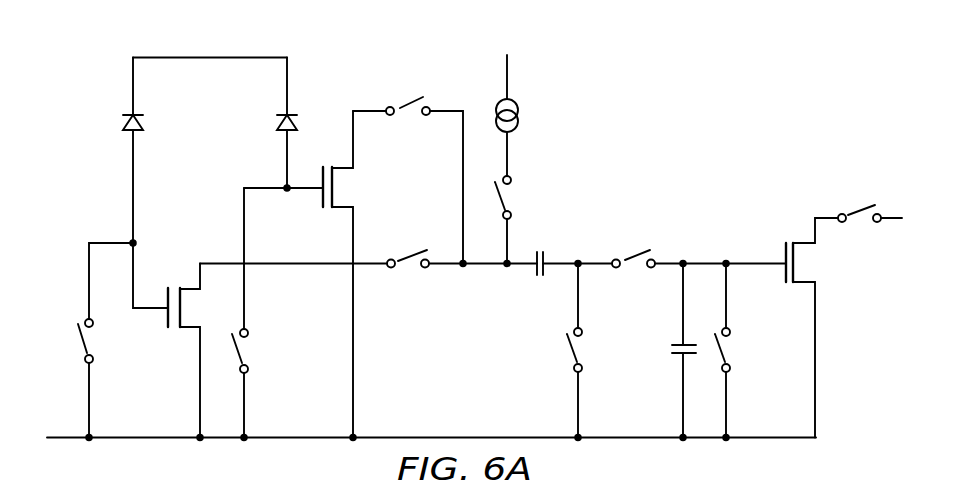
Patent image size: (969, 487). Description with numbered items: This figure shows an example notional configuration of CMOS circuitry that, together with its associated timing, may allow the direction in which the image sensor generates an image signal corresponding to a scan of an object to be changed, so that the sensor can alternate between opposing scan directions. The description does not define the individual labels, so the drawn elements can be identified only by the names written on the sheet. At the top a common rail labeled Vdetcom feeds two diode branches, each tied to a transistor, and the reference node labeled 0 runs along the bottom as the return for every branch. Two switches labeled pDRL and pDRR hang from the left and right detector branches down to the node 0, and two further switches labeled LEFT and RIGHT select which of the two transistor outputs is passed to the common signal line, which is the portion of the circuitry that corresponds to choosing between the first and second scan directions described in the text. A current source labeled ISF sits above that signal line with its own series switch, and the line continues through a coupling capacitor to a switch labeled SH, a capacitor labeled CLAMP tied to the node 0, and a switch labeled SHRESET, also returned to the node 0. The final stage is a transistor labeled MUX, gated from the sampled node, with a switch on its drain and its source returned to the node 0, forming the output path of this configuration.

The ground reference 0 is at (422, 440).
The detector common voltage rail with diodes Vdetcom is at (210, 169).
The left detector reset switch pDRL is at (78, 340).
The right detector reset switch pDRR is at (267, 314).
The left select switch LEFT is at (368, 248).
The right select switch RIGHT is at (408, 169).
The source follower current source ISF is at (522, 159).
The sample and hold switch SH is at (633, 246).
The clamp capacitor CLAMP is at (648, 352).
The sample and hold reset switch SHRESET is at (756, 352).
The multiplexer transistor MUX is at (844, 321).